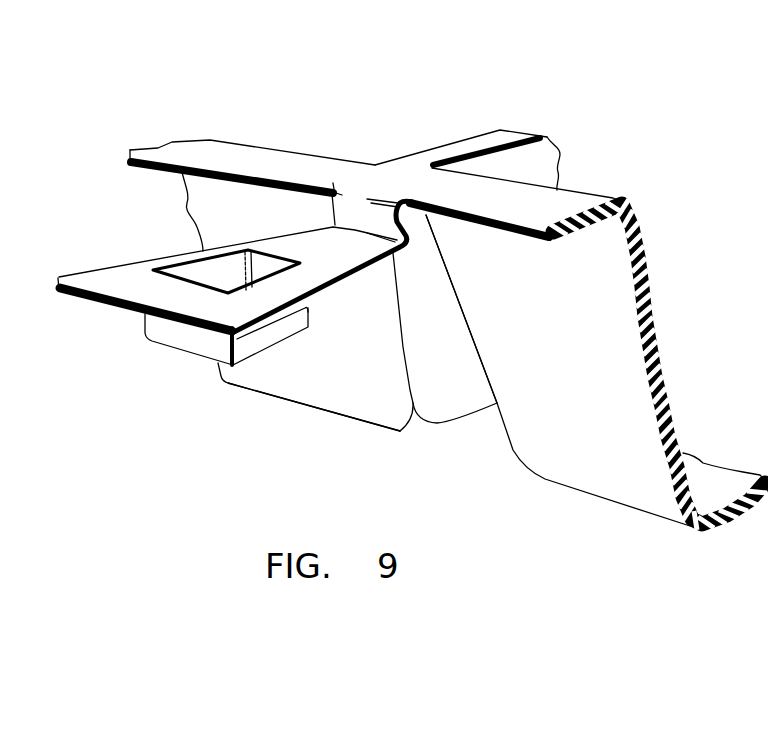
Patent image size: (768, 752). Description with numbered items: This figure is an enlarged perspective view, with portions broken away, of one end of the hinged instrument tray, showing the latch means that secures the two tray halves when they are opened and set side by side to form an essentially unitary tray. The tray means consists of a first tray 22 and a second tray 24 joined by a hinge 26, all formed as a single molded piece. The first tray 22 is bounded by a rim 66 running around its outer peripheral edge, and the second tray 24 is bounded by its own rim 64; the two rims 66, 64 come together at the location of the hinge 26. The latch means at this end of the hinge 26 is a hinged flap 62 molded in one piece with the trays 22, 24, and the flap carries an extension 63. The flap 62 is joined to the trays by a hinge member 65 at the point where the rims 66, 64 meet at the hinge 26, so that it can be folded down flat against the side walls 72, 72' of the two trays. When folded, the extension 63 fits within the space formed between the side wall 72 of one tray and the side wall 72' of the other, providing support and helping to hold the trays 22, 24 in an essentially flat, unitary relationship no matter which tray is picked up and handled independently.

The first tray 22 is at (310, 403).
The second tray 24 is at (547, 478).
The hinge 26 is at (512, 137).
The hinged flap 62 is at (83, 293).
The extension 63 is at (193, 339).
The rim 64 is at (560, 205).
The hinge member 65 is at (360, 214).
The rim 66 is at (195, 153).
The side wall 72 is at (314, 369).
The side wall 72' is at (506, 309).